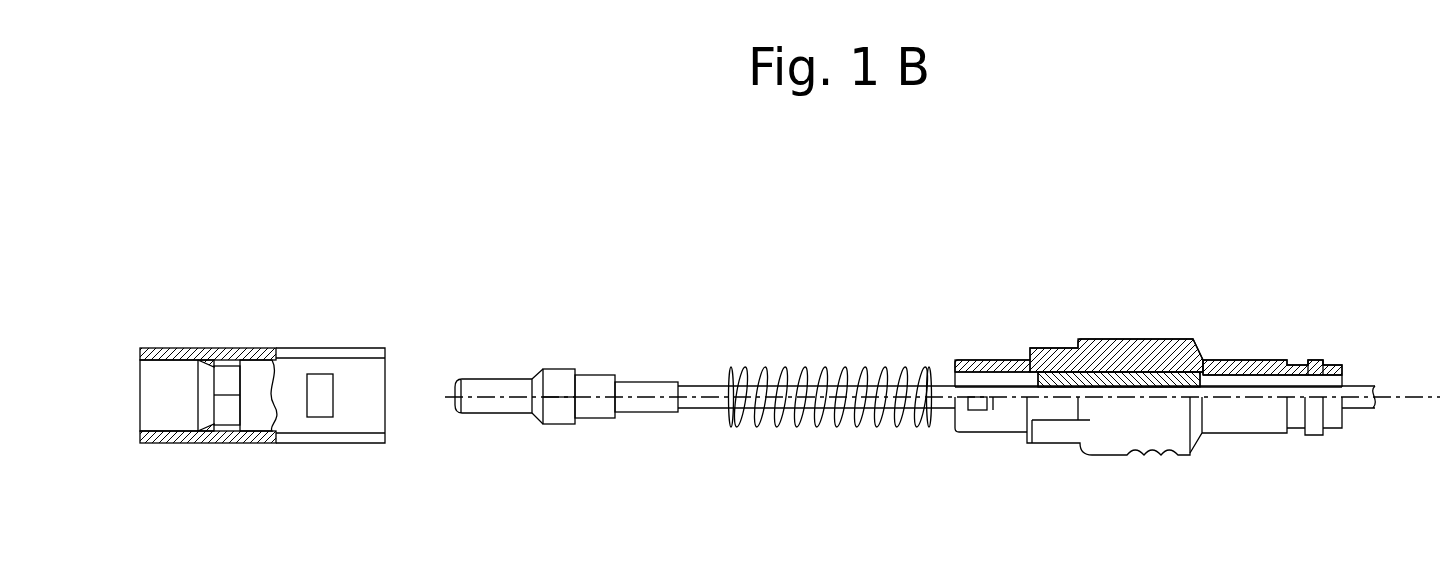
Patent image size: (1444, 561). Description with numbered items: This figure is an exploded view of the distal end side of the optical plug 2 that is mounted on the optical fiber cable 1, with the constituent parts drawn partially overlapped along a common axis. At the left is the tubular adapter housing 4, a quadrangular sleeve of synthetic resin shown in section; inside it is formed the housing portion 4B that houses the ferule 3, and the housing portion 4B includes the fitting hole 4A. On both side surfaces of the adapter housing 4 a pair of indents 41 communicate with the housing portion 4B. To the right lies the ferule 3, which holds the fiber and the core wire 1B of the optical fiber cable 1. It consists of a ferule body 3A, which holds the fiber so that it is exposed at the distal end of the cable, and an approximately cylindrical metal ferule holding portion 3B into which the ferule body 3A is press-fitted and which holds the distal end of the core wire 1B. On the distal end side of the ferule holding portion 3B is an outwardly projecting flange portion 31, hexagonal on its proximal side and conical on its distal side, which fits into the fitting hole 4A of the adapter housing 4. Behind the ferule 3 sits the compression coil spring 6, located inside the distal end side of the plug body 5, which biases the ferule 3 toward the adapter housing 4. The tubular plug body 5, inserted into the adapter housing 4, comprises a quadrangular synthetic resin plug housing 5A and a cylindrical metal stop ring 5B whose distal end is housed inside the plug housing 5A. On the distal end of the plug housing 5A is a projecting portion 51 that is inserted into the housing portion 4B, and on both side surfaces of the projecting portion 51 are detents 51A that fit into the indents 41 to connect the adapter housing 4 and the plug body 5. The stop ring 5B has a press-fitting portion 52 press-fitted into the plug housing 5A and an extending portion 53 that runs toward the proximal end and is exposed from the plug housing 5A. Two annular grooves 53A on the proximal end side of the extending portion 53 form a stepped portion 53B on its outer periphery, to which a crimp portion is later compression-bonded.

The optical fiber cable 1 is at (1394, 357).
The core wire 1B is at (700, 385).
The optical plug 2 is at (1246, 240).
The ferule 3 is at (588, 327).
The ferule body 3A is at (497, 378).
The ferule holding portion 3B is at (613, 372).
The flange portion 31 is at (558, 420).
The adapter housing 4 is at (250, 344).
The fitting hole 4A is at (203, 424).
The housing portion 4B is at (262, 366).
The indents 41 is at (306, 400).
The plug body 5 is at (1033, 315).
The plug housing 5A is at (1092, 343).
The stop ring 5B is at (1213, 358).
The projecting portion 51 is at (1002, 425).
The detents 51A is at (975, 410).
The press-fitting portion 52 is at (1124, 347).
The extending portion 53 is at (1270, 358).
The annular grooves 53A is at (1330, 358).
The stepped portion 53B is at (1290, 435).
The compression coil spring 6 is at (805, 370).